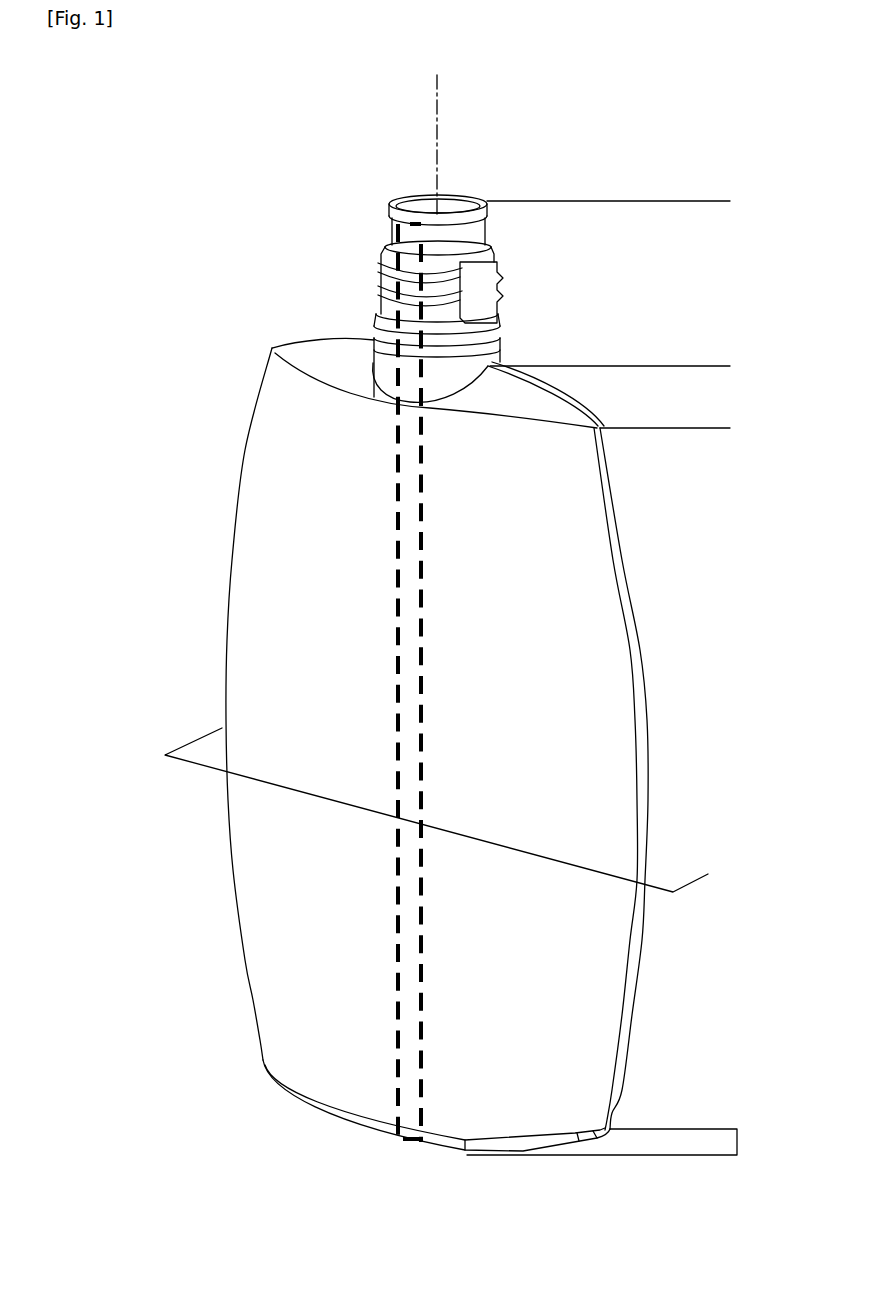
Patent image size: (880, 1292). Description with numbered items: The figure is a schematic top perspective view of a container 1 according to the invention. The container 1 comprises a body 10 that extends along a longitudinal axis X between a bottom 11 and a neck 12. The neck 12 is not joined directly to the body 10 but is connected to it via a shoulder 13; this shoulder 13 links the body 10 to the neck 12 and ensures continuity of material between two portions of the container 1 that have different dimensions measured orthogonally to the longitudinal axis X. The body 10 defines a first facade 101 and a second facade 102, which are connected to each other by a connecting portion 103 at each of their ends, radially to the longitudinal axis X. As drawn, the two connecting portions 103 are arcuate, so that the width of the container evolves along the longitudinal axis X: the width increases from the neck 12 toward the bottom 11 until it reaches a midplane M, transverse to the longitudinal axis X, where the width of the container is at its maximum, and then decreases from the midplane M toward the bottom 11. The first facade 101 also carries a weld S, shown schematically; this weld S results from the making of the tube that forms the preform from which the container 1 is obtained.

The container 1 is at (170, 224).
The body 10 is at (740, 435).
The bottom 11 is at (746, 1129).
The neck 12 is at (740, 212).
The shoulder 13 is at (740, 380).
The first facade 101 is at (267, 512).
The second facade 102 is at (640, 688).
The connecting portion 103 is at (622, 582).
The midplane M is at (203, 740).
The weld S is at (397, 1070).
The longitudinal axis X is at (438, 133).